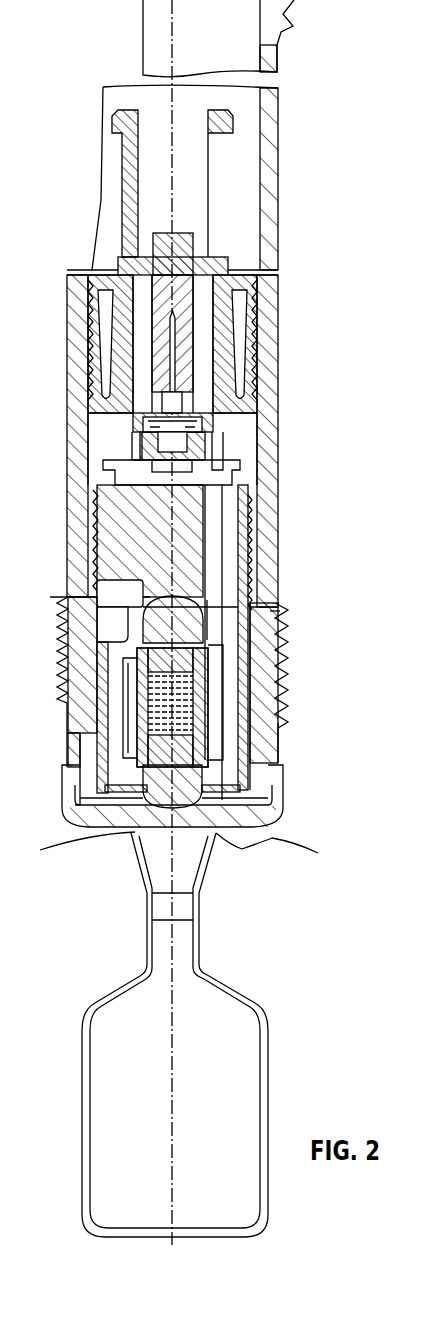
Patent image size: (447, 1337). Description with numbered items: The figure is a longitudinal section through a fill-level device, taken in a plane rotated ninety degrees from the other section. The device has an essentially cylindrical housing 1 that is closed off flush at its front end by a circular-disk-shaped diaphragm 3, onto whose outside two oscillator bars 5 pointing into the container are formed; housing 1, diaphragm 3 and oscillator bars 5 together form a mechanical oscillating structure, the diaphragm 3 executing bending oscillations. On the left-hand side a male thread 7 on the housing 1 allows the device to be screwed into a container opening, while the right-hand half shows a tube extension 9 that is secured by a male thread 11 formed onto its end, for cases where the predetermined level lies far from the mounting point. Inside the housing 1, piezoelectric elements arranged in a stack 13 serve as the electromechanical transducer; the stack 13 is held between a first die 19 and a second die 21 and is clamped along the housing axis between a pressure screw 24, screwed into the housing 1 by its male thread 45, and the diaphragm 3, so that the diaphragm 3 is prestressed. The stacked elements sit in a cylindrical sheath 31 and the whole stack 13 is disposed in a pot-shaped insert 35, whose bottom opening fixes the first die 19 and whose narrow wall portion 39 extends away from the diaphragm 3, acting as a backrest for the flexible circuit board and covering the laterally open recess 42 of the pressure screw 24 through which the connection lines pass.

The housing 1 is at (258, 572).
The diaphragm 3 is at (188, 900).
The oscillator bars 5 is at (242, 1072).
The male thread 7 is at (53, 652).
The tube extension 9 is at (268, 140).
The male thread 11 is at (290, 17).
The stack 13 is at (198, 703).
The first die 19 is at (78, 805).
The second die 21 is at (100, 600).
The pressure screw 24 is at (193, 538).
The sheath 31 is at (203, 752).
The insert 35 is at (90, 697).
The wall portion 39 is at (272, 613).
The recess 42 is at (208, 512).
The male thread 45 is at (88, 538).